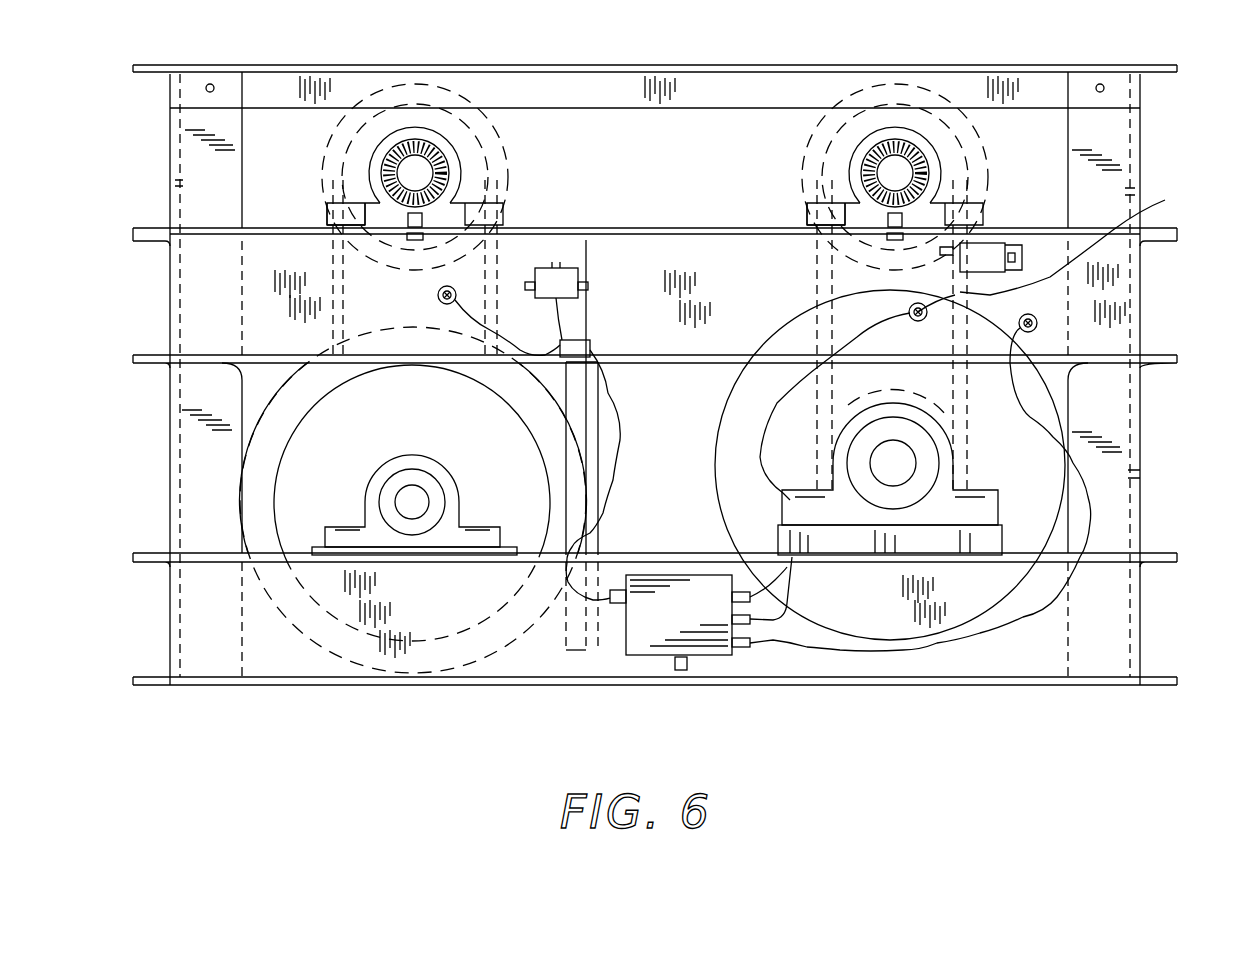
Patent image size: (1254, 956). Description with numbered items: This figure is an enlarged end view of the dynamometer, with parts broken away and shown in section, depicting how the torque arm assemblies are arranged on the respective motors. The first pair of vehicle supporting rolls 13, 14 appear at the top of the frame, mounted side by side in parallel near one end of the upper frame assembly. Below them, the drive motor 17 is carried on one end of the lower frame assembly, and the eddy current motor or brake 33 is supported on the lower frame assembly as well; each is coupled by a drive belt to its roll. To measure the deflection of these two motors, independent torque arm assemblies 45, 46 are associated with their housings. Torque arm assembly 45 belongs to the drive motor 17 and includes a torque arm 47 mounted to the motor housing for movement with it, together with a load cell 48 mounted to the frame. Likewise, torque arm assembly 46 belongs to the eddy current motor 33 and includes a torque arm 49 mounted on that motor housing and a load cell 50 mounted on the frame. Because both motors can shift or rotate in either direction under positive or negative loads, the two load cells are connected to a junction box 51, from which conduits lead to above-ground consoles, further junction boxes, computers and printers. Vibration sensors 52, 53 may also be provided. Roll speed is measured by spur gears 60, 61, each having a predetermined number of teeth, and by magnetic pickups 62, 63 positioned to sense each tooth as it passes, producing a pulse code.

The vehicle supporting roll 13 is at (472, 85).
The vehicle supporting roll 14 is at (927, 90).
The drive motor 17 is at (270, 490).
The eddy current motor or brake 33 is at (895, 625).
The torque arm assembly 45 is at (597, 393).
The torque arm assembly 46 is at (983, 340).
The torque arm 47 is at (600, 475).
The load cell 48 is at (556, 268).
The torque arm 49 is at (955, 292).
The load cell 50 is at (1003, 243).
The junction box 51 is at (640, 645).
The vibration sensor 52 is at (437, 293).
The vibration sensor 53 is at (1040, 325).
The spur gear 60 is at (461, 172).
The spur gear 61 is at (857, 168).
The magnetic pickup 62 is at (366, 203).
The magnetic pickup 63 is at (832, 198).